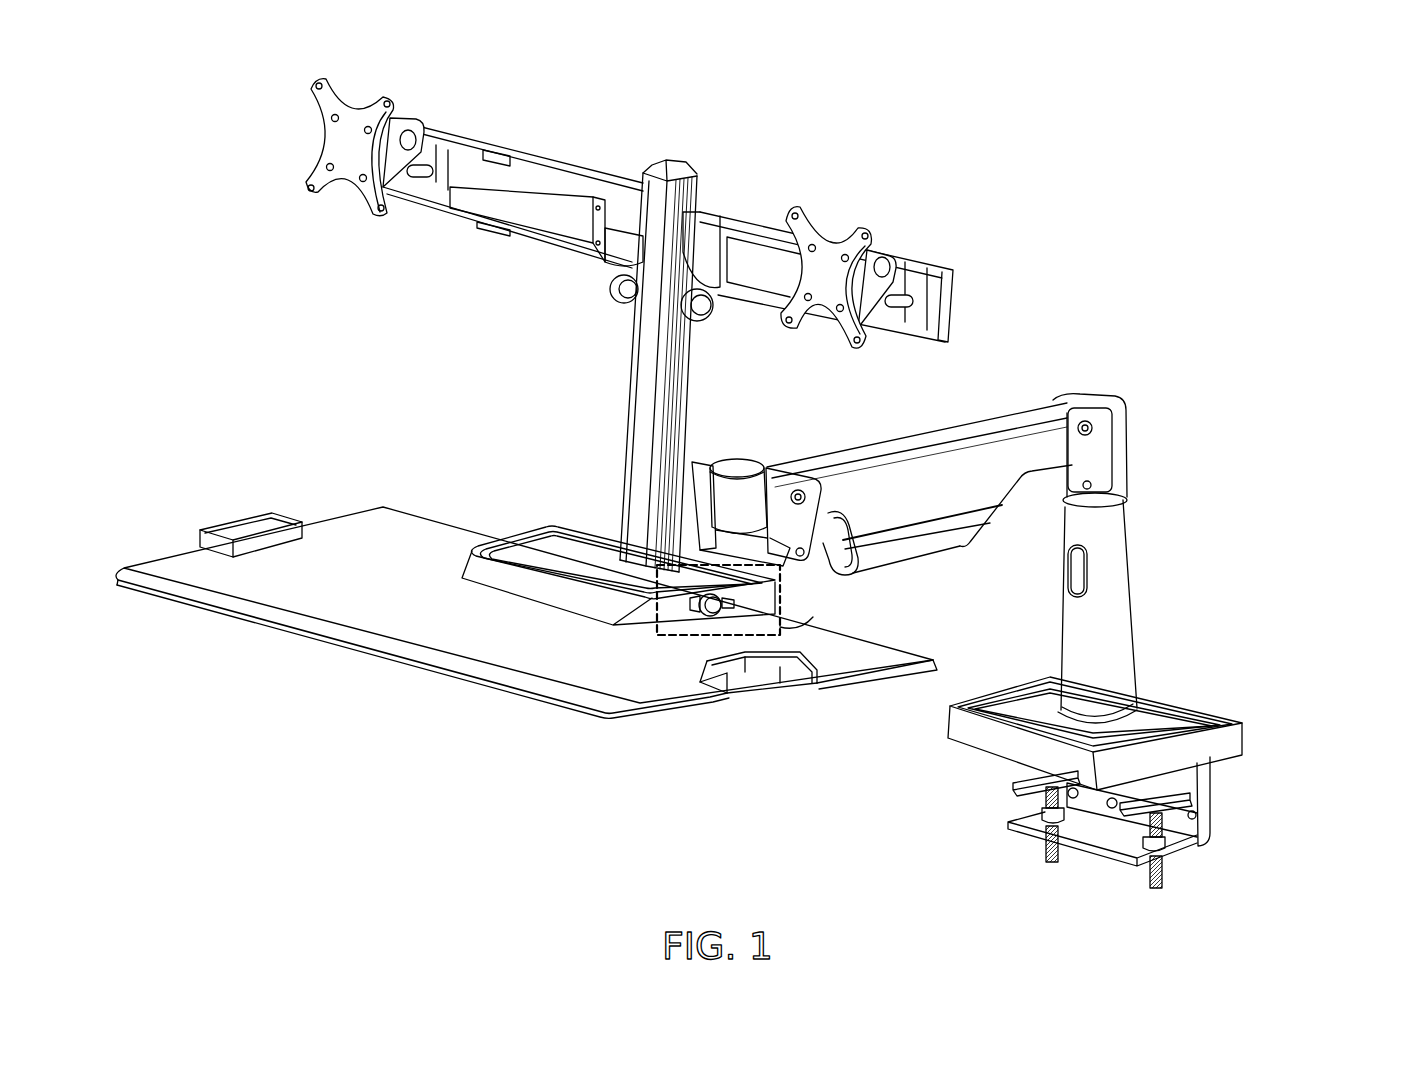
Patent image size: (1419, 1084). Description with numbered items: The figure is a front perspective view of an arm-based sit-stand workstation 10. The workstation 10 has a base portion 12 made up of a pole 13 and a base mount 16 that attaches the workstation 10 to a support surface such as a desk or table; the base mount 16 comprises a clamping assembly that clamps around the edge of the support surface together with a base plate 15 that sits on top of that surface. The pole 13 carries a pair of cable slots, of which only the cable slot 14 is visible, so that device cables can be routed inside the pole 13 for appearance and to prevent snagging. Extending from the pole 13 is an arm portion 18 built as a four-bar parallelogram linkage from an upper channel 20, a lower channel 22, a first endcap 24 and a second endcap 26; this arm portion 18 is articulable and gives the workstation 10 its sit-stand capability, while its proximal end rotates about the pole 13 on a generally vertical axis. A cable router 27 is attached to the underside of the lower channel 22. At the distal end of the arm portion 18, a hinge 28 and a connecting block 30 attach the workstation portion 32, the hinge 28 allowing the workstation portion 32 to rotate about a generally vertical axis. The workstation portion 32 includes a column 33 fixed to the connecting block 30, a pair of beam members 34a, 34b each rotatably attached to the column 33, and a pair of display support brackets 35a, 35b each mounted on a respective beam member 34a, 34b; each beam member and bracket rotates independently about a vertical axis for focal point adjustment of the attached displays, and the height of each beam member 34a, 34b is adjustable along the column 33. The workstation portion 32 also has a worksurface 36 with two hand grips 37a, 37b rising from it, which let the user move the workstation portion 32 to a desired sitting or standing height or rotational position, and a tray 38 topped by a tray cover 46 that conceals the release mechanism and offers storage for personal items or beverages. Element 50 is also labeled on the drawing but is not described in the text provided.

The arm-based sit-stand workstation 10 is at (178, 74).
The base portion 12 is at (1215, 525).
The pole 13 is at (1120, 607).
The cable slot 14 is at (1073, 573).
The base plate 15 is at (1183, 723).
The base mount 16 is at (1262, 792).
The arm portion 18 is at (1006, 360).
The upper channel 20 is at (883, 447).
The lower channel 22 is at (1030, 488).
The first endcap 24 is at (773, 500).
The second endcap 26 is at (1120, 432).
The cable router 27 is at (910, 557).
The hinge 28 is at (710, 465).
The connecting block 30 is at (690, 467).
The workstation portion 32 is at (426, 388).
The column 33 is at (655, 190).
The beam member 34a is at (533, 190).
The beam member 34b is at (770, 255).
The display support bracket 35a is at (350, 123).
The display support bracket 35b is at (850, 250).
The worksurface 36 is at (363, 612).
The hand grip 37a is at (235, 530).
The hand grip 37b is at (750, 663).
The tray 38 is at (477, 570).
The tray cover 46 is at (537, 545).
The hook 50 is at (790, 550).